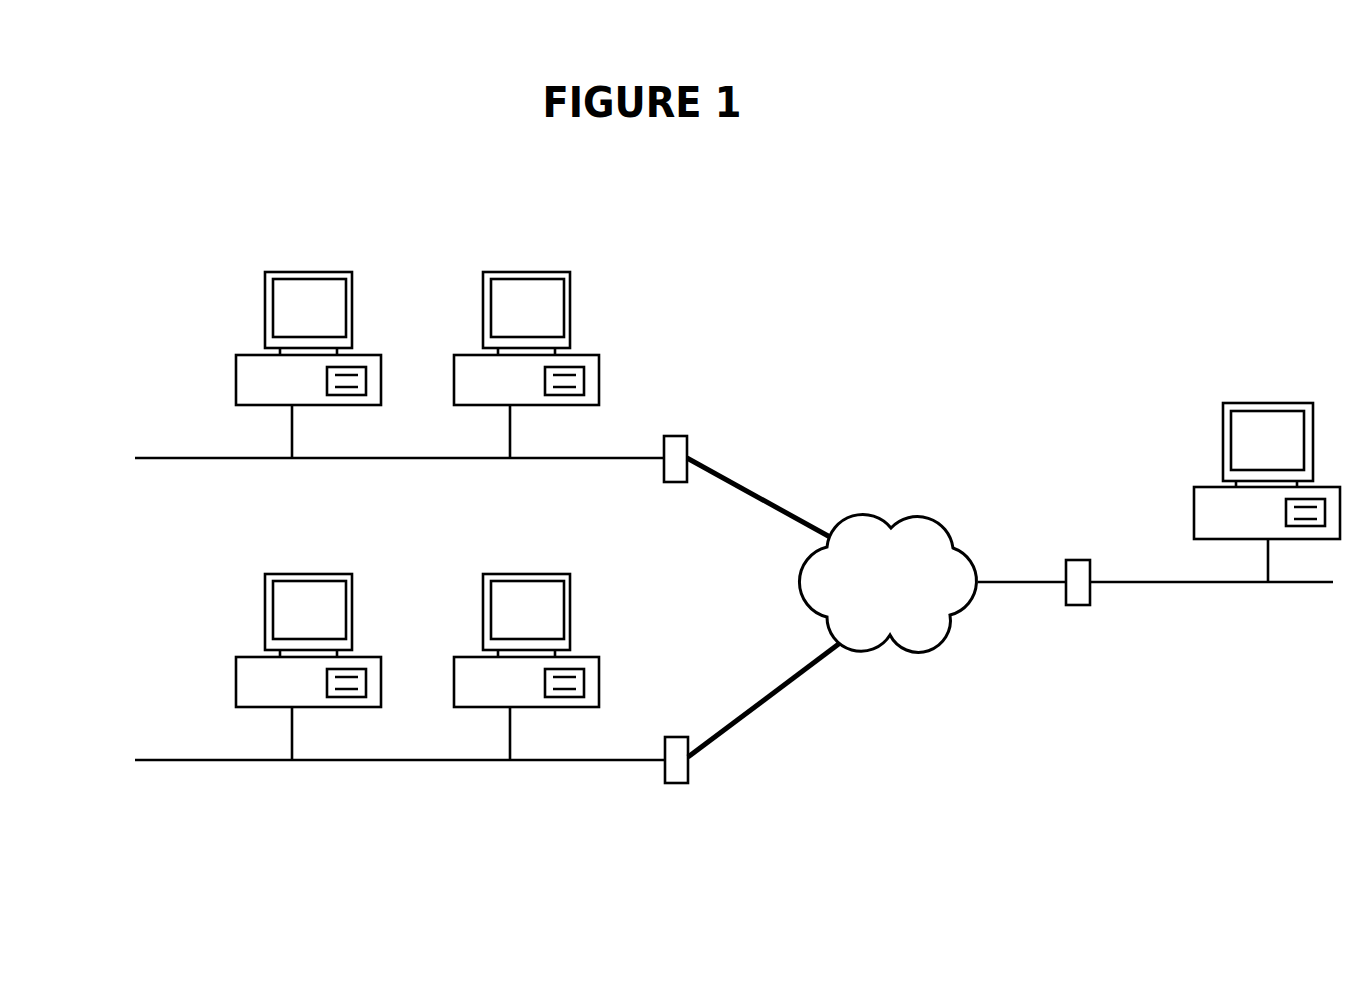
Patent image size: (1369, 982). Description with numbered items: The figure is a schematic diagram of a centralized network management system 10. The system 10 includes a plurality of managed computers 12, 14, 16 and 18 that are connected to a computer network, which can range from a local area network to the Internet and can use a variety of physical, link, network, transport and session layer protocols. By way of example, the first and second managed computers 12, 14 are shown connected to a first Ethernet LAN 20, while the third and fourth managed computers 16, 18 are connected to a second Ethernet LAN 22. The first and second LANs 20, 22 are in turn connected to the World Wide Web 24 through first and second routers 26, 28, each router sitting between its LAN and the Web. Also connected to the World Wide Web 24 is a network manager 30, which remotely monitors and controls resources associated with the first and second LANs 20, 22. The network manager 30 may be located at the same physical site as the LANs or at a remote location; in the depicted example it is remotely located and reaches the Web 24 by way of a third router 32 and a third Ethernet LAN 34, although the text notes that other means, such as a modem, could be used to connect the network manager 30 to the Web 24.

The system 10 is at (1062, 770).
The first managed computer 12 is at (314, 272).
The second managed computer 14 is at (532, 272).
The third managed computer 16 is at (313, 573).
The fourth managed computer 18 is at (531, 573).
The first Ethernet LAN 20 is at (180, 458).
The second Ethernet LAN 22 is at (180, 760).
The World Wide Web 24 is at (863, 515).
The first router 26 is at (676, 436).
The second router 28 is at (676, 783).
The network manager 30 is at (1273, 403).
The third router 32 is at (1078, 560).
The third Ethernet LAN 34 is at (1155, 582).